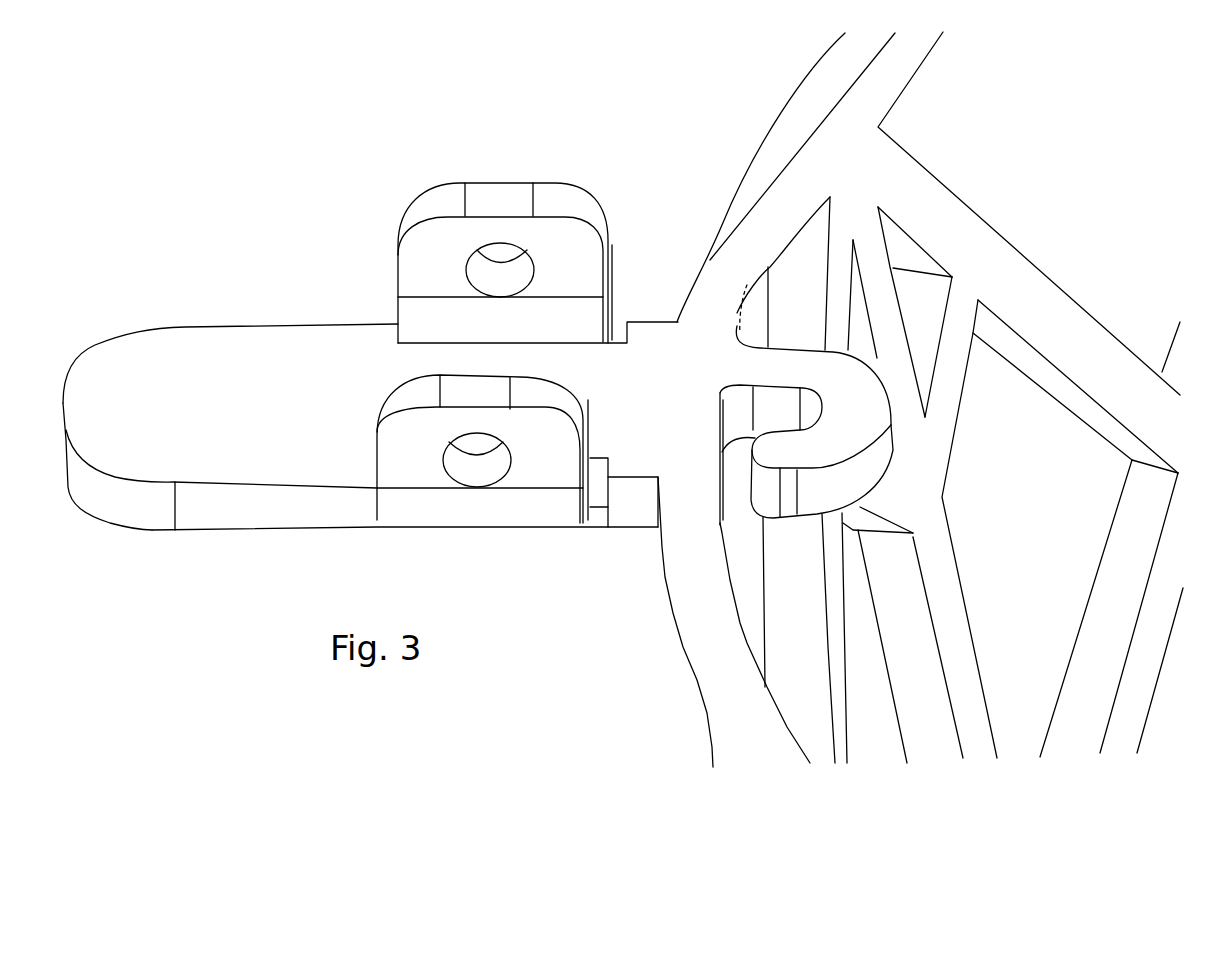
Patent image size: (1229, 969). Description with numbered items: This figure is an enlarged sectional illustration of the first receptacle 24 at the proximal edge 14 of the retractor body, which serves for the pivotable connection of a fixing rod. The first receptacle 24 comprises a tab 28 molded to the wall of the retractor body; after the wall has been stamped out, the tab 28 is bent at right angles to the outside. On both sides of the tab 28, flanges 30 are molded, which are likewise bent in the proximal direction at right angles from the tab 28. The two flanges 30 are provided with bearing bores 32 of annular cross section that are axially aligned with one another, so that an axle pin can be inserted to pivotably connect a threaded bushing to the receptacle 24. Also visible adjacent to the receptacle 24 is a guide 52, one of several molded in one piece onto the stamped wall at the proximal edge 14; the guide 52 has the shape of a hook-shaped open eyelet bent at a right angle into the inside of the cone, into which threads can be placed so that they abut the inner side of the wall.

The proximal upper edge 14 is at (845, 118).
The first receptacle 24 is at (335, 190).
The tab 28 is at (308, 370).
The flange 30 is at (437, 250).
The bearing bore 32 is at (507, 258).
The guide 52 is at (805, 455).